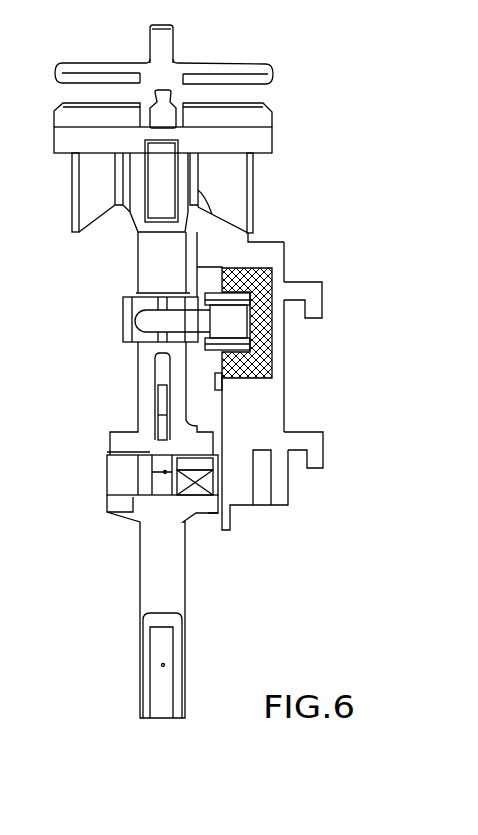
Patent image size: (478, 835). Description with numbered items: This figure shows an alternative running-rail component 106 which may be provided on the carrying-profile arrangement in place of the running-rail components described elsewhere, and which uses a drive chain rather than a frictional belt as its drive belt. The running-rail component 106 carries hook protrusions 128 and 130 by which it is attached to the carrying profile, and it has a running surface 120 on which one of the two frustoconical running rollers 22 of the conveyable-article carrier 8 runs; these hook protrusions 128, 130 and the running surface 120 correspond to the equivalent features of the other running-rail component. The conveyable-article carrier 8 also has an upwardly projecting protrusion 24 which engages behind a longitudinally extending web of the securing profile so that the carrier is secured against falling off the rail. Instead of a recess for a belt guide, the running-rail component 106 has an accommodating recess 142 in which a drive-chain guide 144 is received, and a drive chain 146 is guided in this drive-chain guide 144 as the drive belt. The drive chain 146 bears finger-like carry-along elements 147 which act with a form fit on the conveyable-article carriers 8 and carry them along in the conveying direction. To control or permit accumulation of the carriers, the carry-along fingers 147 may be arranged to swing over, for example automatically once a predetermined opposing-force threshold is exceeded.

The upwardly projecting protrusion 24 is at (157, 41).
The frustoconical running roller 22 is at (238, 170).
The running surface 120 is at (219, 212).
The conveyable-article carrier 8 is at (148, 270).
The hook protrusion 128 is at (312, 294).
The carry-along element 147 is at (148, 318).
The drive-chain guide 144 is at (275, 308).
The accommodating recess 142 is at (275, 332).
The drive chain 146 is at (219, 347).
The running-rail component 106 is at (273, 410).
The hook protrusion 130 is at (313, 451).